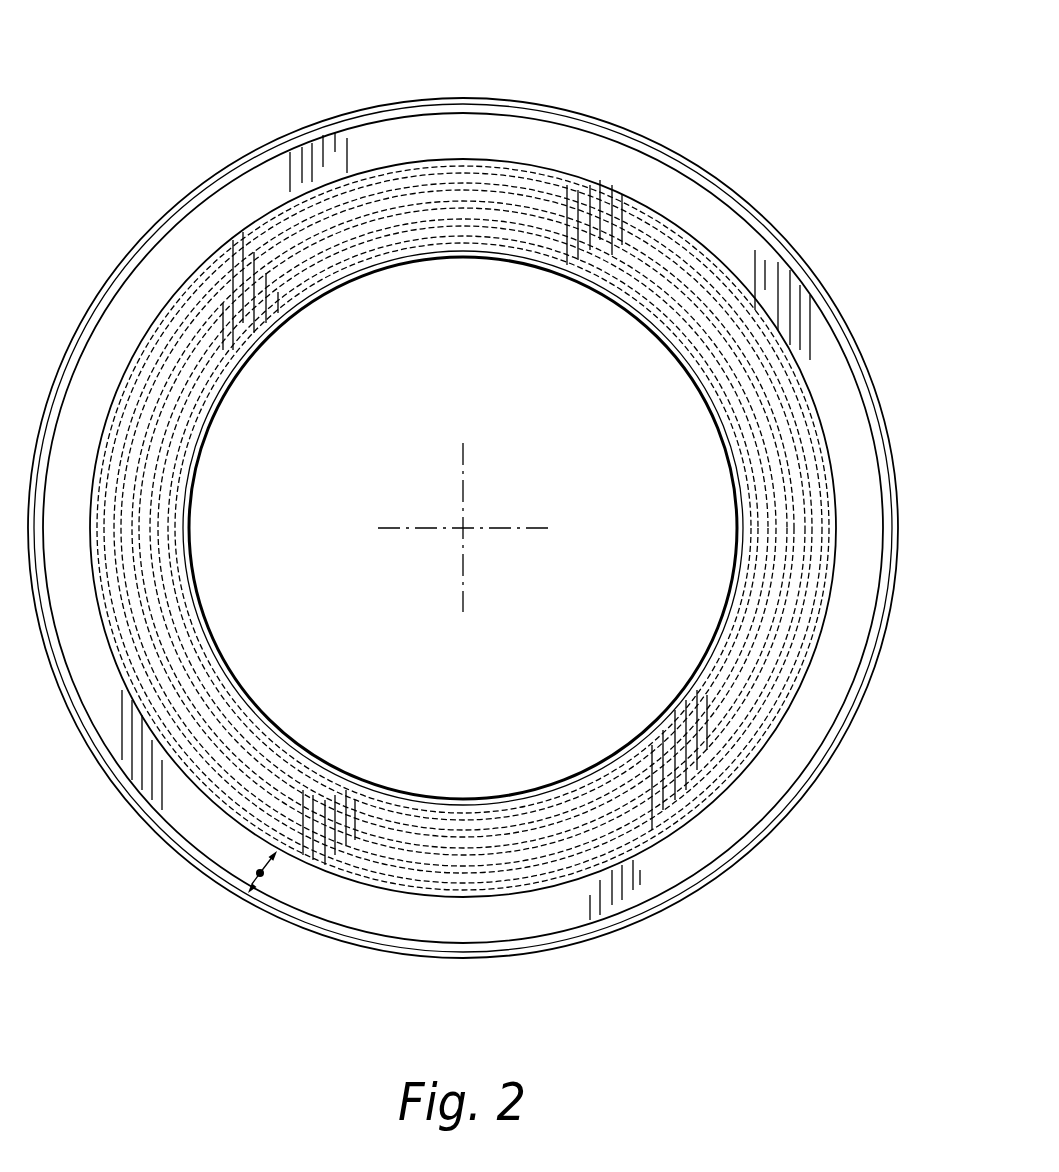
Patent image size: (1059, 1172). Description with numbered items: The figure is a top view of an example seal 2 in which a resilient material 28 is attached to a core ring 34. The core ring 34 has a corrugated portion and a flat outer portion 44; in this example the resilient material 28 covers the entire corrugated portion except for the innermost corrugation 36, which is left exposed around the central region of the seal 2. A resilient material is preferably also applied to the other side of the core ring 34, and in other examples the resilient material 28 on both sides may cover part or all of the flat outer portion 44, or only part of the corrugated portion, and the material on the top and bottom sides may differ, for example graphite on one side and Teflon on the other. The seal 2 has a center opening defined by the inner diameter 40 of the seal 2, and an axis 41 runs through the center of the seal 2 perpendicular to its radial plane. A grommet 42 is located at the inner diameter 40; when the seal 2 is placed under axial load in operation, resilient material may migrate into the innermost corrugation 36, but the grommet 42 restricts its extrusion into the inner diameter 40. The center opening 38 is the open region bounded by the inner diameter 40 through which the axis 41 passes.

The seal 2 is at (463, 507).
The core ring 34 is at (640, 170).
The resilient material 28 is at (675, 855).
The innermost corrugation 36 is at (200, 622).
The opening 38 is at (553, 414).
The inner diameter 40 is at (272, 725).
The axis 41 is at (463, 527).
The grommet 42 is at (430, 797).
The flat outer portion 44 is at (260, 873).